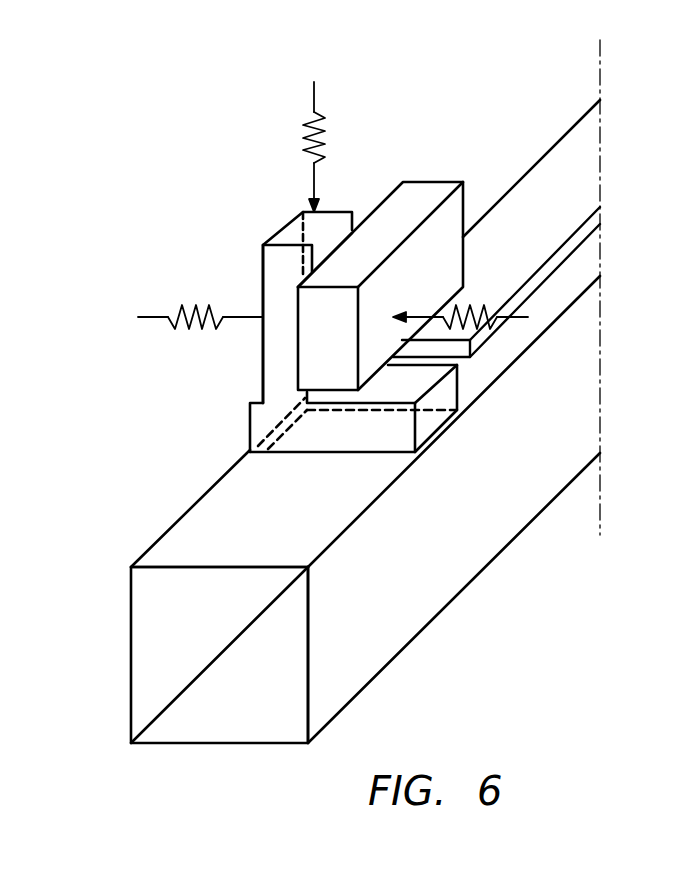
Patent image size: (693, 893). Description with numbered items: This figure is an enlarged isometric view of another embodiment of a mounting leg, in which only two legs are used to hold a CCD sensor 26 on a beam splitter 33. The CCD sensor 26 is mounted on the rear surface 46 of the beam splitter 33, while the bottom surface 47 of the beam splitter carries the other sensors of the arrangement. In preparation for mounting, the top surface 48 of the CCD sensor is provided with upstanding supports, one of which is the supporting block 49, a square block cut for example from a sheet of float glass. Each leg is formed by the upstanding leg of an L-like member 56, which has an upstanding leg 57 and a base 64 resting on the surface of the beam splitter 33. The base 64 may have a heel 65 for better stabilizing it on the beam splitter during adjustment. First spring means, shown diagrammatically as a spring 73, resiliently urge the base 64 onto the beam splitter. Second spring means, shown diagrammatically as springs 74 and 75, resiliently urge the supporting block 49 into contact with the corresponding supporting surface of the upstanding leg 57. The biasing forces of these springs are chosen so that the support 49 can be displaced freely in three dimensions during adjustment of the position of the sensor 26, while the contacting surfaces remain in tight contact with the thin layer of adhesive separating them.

The CCD sensor 26 is at (542, 163).
The beam splitter 33 is at (170, 528).
The rear surface 46 is at (235, 507).
The bottom surface 47 is at (460, 573).
The top surface 48 is at (590, 165).
The supporting block 49 is at (440, 182).
The L-like member 56 is at (282, 226).
The upstanding leg 57 is at (278, 358).
The base 64 is at (428, 420).
The heel 65 is at (250, 418).
The spring 73 is at (332, 147).
The spring 74 is at (203, 298).
The spring 75 is at (477, 302).